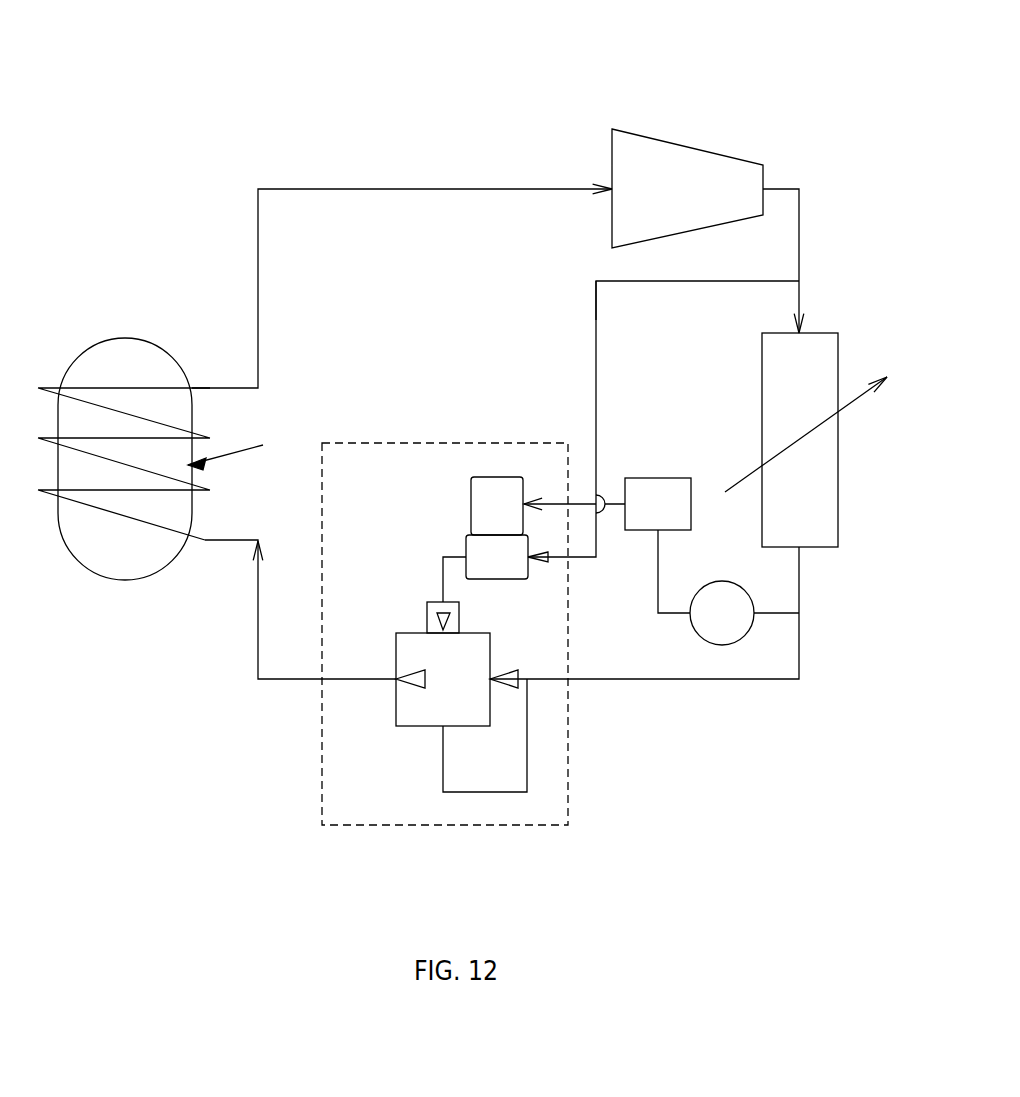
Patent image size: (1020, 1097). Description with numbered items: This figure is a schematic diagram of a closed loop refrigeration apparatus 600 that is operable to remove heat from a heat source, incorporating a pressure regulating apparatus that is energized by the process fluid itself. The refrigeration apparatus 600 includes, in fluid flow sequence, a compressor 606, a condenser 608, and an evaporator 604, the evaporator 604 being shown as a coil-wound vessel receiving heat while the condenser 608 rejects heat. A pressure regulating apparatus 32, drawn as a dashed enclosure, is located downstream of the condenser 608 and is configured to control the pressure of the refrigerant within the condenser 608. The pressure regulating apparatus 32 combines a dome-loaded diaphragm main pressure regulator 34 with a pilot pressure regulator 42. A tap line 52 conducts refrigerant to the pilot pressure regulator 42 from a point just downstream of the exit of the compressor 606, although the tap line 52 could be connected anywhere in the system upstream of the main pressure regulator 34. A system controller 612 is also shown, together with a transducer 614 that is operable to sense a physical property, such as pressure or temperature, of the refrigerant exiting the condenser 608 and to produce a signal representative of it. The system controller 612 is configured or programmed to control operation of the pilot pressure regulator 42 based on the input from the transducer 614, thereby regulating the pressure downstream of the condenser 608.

The refrigeration apparatus 600 is at (469, 70).
The compressor 606 is at (655, 212).
The tap line 52 is at (597, 322).
The condenser 608 is at (767, 367).
The system controller 612 is at (636, 520).
The transducer 614 is at (700, 627).
The pilot pressure regulator 42 is at (482, 520).
The main pressure regulator 34 is at (473, 632).
The pressure regulating apparatus 32 is at (530, 827).
The evaporator 604 is at (125, 563).